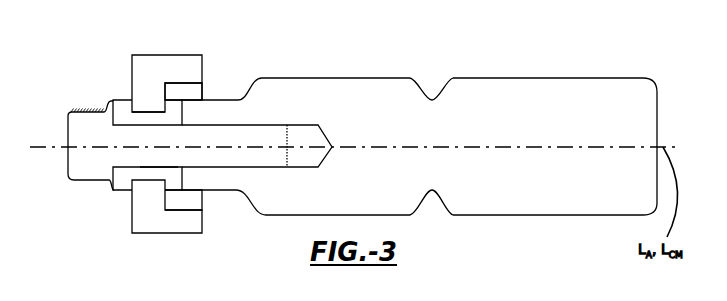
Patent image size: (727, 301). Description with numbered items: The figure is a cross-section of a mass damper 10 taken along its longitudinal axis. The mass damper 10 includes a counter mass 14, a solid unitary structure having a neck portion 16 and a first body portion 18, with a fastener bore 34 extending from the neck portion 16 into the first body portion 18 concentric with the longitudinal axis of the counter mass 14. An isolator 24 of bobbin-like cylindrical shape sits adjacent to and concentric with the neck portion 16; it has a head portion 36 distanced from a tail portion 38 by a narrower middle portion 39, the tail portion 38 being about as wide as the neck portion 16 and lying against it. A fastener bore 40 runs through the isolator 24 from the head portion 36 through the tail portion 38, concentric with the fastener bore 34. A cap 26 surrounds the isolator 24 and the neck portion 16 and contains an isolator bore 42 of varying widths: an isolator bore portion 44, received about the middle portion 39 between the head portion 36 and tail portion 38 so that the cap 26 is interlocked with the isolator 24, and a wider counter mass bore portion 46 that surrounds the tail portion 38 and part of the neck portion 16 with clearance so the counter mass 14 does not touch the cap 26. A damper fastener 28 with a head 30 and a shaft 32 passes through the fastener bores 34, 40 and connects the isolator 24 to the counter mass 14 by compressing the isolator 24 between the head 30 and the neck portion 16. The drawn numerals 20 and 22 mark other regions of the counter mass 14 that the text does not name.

The mass damper 10 is at (70, 70).
The counter mass 14 is at (589, 92).
The neck portion 16 is at (232, 183).
The first body portion 18 is at (345, 90).
The groove 20 is at (435, 108).
The head portion 22 is at (535, 88).
The isolator 24 is at (122, 106).
The cap 26 is at (151, 68).
The damper fastener 28 is at (78, 121).
The head 30 is at (80, 173).
The shaft 32 is at (262, 155).
The fastener bore 34 is at (296, 136).
The head portion 36 is at (123, 182).
The tail portion 38 is at (170, 180).
The middle portion 39 is at (147, 173).
The fastener bore 40 is at (155, 168).
The isolator bore 42 is at (184, 89).
The isolator bore portion 44 is at (156, 111).
The counter mass bore portion 46 is at (199, 91).